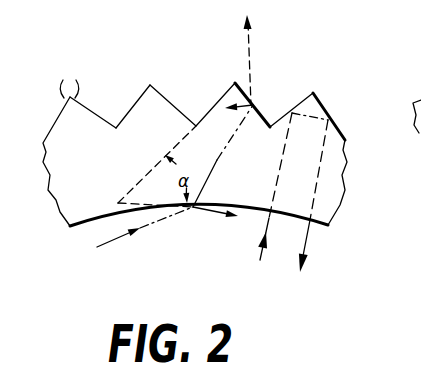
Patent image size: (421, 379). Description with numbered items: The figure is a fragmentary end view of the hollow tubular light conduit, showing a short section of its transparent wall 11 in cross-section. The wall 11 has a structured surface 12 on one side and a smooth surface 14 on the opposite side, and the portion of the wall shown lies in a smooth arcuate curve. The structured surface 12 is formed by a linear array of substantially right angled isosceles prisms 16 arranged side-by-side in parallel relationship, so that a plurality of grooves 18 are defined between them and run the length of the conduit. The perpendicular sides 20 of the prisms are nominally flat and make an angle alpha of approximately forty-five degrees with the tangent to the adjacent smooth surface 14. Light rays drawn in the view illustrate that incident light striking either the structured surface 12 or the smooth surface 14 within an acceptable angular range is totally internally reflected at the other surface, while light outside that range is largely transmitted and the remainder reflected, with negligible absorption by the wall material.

The wall 11 is at (67, 192).
The structured surface 12 is at (235, 83).
The smooth surface 14 is at (88, 223).
The right angled isosceles prisms 16 is at (158, 95).
The grooves 18 is at (115, 127).
The perpendicular sides 20 is at (85, 91).